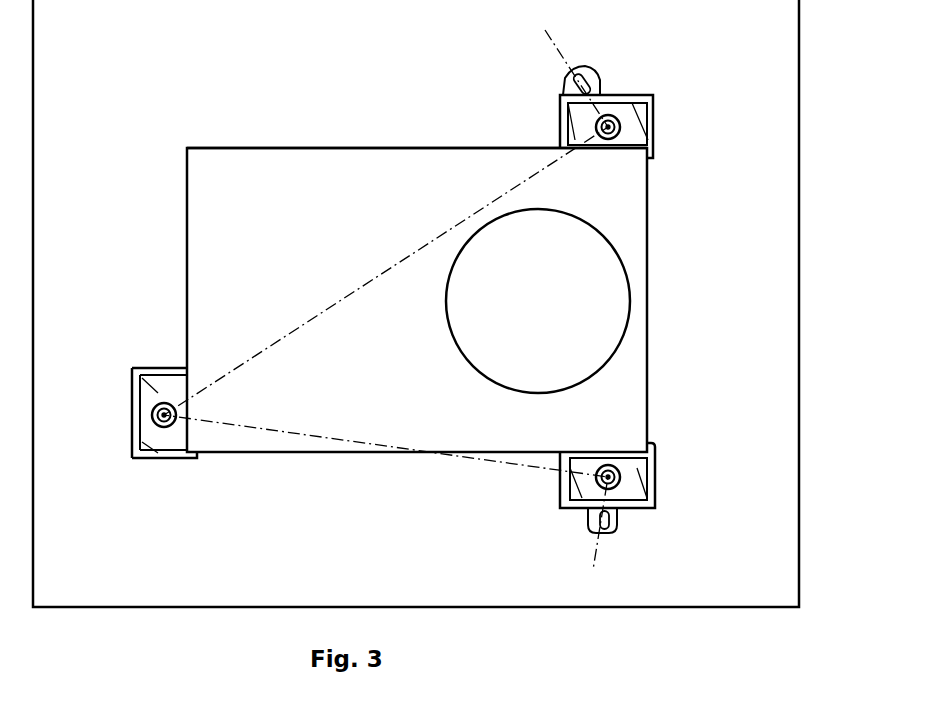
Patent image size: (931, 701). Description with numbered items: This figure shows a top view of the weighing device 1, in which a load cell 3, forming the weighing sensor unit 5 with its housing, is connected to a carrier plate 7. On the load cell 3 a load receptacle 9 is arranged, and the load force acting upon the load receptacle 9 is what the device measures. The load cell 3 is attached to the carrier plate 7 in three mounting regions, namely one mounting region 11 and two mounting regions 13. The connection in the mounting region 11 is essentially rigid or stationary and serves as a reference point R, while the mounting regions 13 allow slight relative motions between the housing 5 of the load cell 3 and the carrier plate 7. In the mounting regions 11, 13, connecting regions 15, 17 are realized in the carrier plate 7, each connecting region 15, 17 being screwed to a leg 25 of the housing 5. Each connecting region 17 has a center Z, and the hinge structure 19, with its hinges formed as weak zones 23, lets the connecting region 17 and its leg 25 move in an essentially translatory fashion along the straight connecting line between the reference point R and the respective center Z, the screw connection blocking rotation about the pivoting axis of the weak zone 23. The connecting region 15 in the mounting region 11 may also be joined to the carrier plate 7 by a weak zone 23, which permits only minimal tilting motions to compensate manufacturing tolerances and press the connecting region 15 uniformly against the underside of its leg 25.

The weighing device 1 is at (416, 339).
The load cell 3 is at (417, 267).
The weighing sensor unit 5 is at (387, 157).
The carrier plate 7 is at (113, 592).
The load receptacle 9 is at (462, 278).
The mounting region 11 is at (133, 392).
The mounting region 13 is at (624, 298).
The connecting region 15 is at (146, 452).
The connecting region 17 is at (640, 110).
The hinge structure 19 is at (606, 72).
The weak zone 23 is at (167, 372).
The leg 25 is at (632, 131).
The reference point R is at (146, 417).
The center Z is at (607, 140).